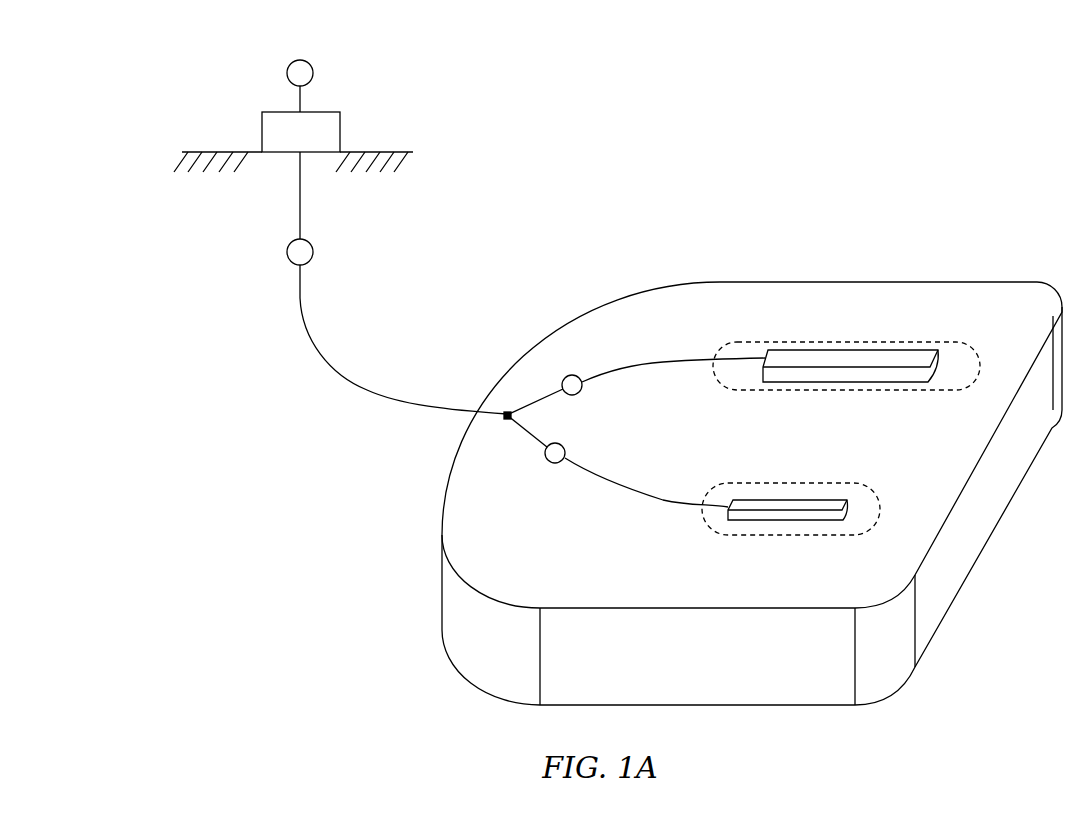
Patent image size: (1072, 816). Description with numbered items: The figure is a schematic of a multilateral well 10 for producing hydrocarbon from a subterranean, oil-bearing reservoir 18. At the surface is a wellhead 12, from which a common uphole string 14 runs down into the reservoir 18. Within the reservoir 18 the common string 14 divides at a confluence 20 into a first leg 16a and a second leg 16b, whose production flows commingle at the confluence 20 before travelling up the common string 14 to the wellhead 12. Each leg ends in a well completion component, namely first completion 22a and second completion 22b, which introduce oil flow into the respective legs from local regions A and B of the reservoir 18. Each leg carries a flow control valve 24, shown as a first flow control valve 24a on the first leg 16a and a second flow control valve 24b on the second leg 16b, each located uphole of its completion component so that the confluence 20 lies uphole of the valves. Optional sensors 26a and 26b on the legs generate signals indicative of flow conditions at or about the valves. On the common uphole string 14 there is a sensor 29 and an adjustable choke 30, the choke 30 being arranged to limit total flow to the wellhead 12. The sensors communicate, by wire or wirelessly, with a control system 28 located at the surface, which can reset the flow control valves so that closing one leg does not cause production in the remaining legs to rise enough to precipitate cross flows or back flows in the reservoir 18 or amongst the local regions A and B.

The multilateral well 10 is at (222, 103).
The wellhead 12 is at (340, 130).
The common uphole string 14 is at (328, 368).
The first leg 16a is at (660, 366).
The second leg 16b is at (700, 493).
The subterranean reservoir 18 is at (940, 281).
The confluence 20 is at (503, 408).
The first well completion component 22a is at (856, 350).
The second well completion component 22b is at (790, 499).
The flow control valve 24 is at (531, 415).
The first flow control valve 24a is at (571, 374).
The second flow control valve 24b is at (554, 464).
The first sensor 26a is at (548, 357).
The second sensor 26b is at (518, 457).
The control system 28 is at (313, 73).
The sensor 29 is at (275, 160).
The adjustable choke 30 is at (313, 248).
The local region A is at (806, 390).
The local region B is at (800, 535).